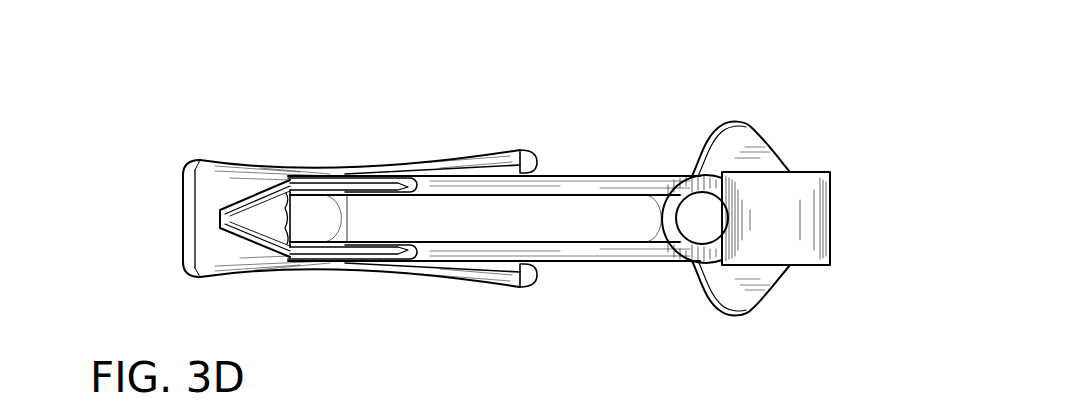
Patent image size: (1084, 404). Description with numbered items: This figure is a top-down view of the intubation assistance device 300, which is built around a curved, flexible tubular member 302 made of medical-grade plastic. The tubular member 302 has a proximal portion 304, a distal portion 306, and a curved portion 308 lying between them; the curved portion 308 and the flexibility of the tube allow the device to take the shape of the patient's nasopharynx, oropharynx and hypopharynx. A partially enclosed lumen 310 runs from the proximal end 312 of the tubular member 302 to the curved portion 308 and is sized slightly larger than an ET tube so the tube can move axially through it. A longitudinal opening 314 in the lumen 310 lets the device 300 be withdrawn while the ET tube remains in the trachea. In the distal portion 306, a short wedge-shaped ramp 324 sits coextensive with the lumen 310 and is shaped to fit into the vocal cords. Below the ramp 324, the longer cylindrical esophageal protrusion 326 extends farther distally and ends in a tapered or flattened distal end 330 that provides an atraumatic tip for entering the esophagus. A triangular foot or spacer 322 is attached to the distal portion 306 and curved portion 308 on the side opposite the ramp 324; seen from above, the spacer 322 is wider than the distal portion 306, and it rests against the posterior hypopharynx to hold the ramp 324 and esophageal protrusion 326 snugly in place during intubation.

The intubation assistance device 300 is at (822, 145).
The tubular member 302 is at (568, 178).
The proximal portion 304 is at (653, 157).
The distal portion 306 is at (322, 160).
The curved portion 308 is at (477, 138).
The lumen 310 is at (580, 222).
The proximal end 312 is at (698, 227).
The longitudinal opening 314 is at (423, 227).
The spacer 322 is at (483, 282).
The ramp 324 is at (253, 208).
The esophageal protrusion 326 is at (210, 180).
The tapered or flattened distal end 330 is at (185, 238).